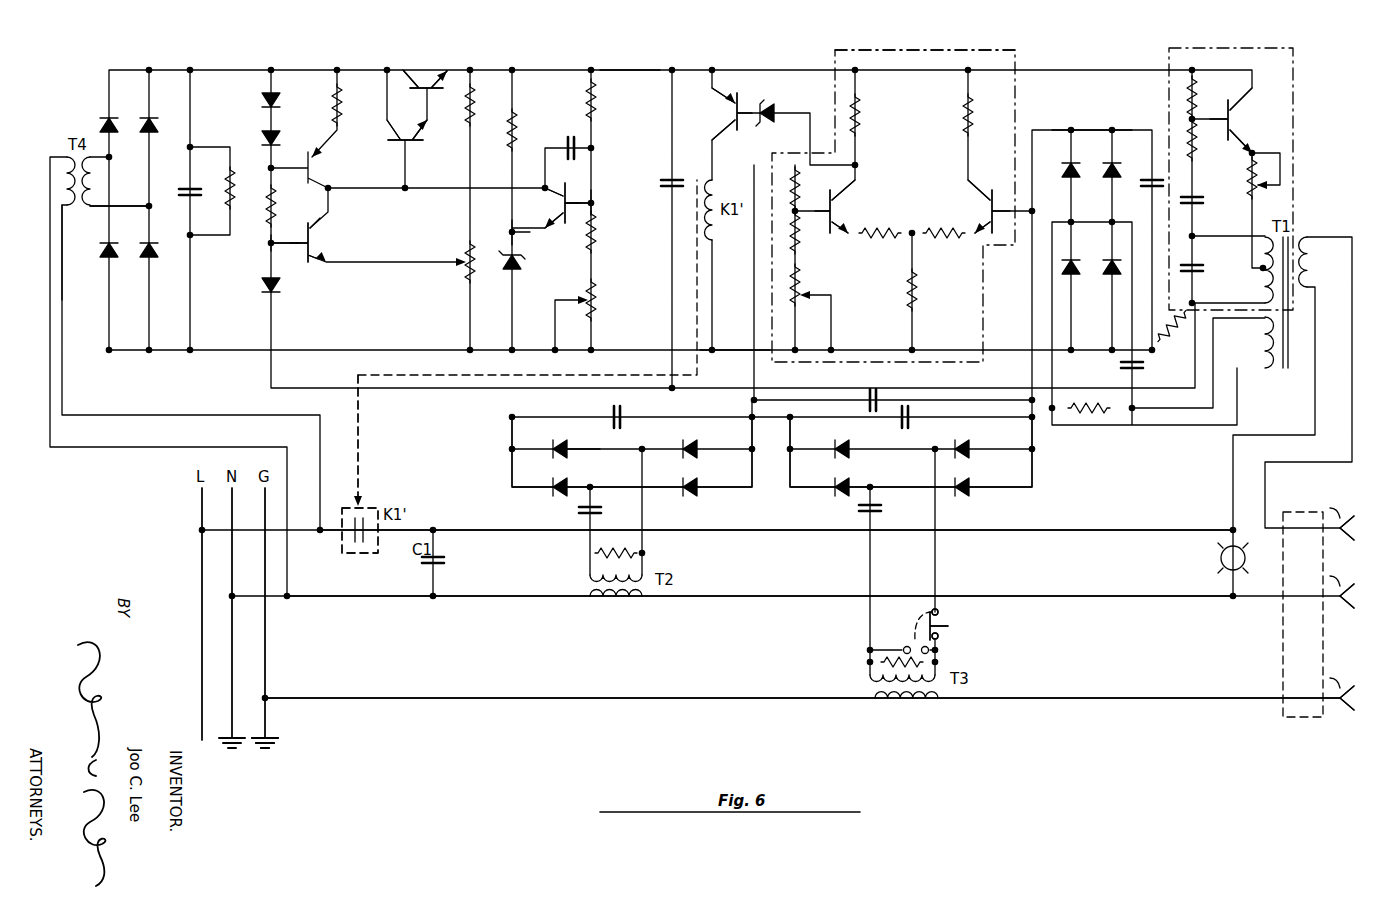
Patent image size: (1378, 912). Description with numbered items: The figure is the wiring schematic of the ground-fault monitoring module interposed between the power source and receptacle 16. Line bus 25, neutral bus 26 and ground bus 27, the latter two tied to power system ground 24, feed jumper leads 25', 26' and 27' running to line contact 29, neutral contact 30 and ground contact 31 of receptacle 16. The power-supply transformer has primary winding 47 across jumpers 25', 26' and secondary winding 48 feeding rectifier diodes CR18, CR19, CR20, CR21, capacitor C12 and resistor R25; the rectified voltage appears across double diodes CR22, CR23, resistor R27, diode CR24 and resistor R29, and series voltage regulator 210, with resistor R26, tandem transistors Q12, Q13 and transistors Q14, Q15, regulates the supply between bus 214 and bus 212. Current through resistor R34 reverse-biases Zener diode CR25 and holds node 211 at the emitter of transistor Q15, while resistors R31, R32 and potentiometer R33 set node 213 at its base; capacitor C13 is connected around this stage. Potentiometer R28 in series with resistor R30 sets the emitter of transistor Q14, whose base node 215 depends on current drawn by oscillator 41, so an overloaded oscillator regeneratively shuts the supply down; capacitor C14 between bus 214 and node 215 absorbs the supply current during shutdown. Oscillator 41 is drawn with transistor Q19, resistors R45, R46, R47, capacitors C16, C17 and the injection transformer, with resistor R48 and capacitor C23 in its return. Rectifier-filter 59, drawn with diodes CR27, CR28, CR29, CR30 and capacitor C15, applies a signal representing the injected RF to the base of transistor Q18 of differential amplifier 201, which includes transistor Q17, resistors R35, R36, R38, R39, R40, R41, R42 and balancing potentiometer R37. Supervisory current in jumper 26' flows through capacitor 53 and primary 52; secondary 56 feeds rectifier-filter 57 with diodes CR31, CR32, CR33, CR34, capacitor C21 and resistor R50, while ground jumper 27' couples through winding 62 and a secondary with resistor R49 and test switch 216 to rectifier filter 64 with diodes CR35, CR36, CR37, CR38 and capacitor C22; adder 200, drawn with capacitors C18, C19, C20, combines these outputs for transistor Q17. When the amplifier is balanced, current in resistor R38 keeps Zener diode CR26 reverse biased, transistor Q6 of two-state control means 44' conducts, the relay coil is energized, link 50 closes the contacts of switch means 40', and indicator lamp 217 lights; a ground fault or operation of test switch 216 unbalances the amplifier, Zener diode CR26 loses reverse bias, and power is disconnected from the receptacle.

The series voltage regulator 210 is at (441, 90).
The bus 214 is at (630, 70).
The two-state control means 44' is at (748, 79).
The differential amplifier 201 is at (918, 48).
The oscillator 41 is at (1196, 45).
The rectifier-filter 59 is at (1087, 135).
The node 215 is at (268, 246).
The node 211 is at (512, 230).
The node 213 is at (591, 203).
The bus 212 is at (744, 352).
The primary winding 47 is at (71, 252).
The secondary winding 48 is at (93, 185).
The adder 200 is at (504, 418).
The link 50 is at (368, 462).
The rectifier-filter 57 is at (534, 462).
The rectifier filter 64 is at (1000, 463).
The line jumper 25' is at (776, 521).
The neutral jumper 26' is at (760, 621).
The ground jumper 27' is at (802, 718).
The capacitor 53 is at (437, 562).
The secondary 56 is at (588, 572).
The primary 52 is at (610, 601).
The switch means 40' is at (368, 547).
The line bus 25 is at (184, 614).
The neutral bus 26 is at (218, 613).
The ground bus 27 is at (248, 613).
The power system ground 24 is at (275, 735).
The indicator lamp 217 is at (1221, 559).
The line contact 29 is at (1339, 510).
The neutral contact 30 is at (1339, 578).
The ground contact 31 is at (1343, 678).
The receptacle 16 is at (1280, 713).
The test switch 216 is at (952, 630).
The transformer T3 winding 62 is at (920, 703).
The diode CR18 is at (92, 114).
The diode CR19 is at (166, 114).
The diode CR20 is at (166, 264).
The diode CR21 is at (92, 264).
The double diode CR22 is at (292, 94).
The double diode CR23 is at (292, 132).
The diode CR24 is at (292, 289).
The Zener diode CR25 is at (533, 266).
The Zener diode CR26 is at (788, 108).
The diode CR27 is at (1068, 150).
The diode CR28 is at (1116, 150).
The diode CR29 is at (1078, 262).
The diode CR30 is at (1112, 278).
The diode CR31 is at (554, 443).
The diode CR32 is at (694, 443).
The diode CR33 is at (535, 496).
The diode CR34 is at (698, 496).
The diode CR35 is at (846, 442).
The diode CR36 is at (983, 443).
The diode CR37 is at (864, 481).
The diode CR38 is at (985, 496).
The capacitor C12 is at (180, 181).
The capacitor C13 is at (571, 142).
The capacitor C14 is at (656, 175).
The capacitor C15 is at (1140, 187).
The capacitor C16 is at (1205, 209).
The capacitor C17 is at (1205, 258).
The capacitor C18 is at (882, 400).
The capacitor C19 is at (637, 424).
The capacitor C20 is at (922, 423).
The capacitor C21 is at (606, 511).
The capacitor C22 is at (887, 515).
The capacitor C23 is at (1111, 365).
The resistor R25 is at (245, 188).
The resistor R26 is at (353, 105).
The resistor R27 is at (289, 206).
The potentiometer R28 is at (452, 256).
The resistor R29 is at (1172, 326).
The resistor R30 is at (486, 105).
The resistor R31 is at (608, 100).
The resistor R32 is at (608, 232).
The potentiometer R33 is at (608, 300).
The resistor R34 is at (528, 130).
The resistor R35 is at (811, 188).
The resistor R36 is at (811, 234).
The potentiometer R37 is at (814, 285).
The resistor R38 is at (873, 115).
The resistor R39 is at (948, 115).
The resistor R40 is at (880, 245).
The resistor R41 is at (944, 245).
The resistor R42 is at (927, 290).
The resistor R45 is at (1208, 97).
The resistor R46 is at (1208, 140).
The variable resistor R47 is at (1235, 178).
The resistor R48 is at (1092, 398).
The resistor R49 is at (870, 664).
The resistor R50 is at (616, 545).
The transistor Q6 is at (725, 114).
The tandem transistor Q12 is at (425, 70).
The tandem transistor Q13 is at (399, 142).
The transistor Q14 is at (322, 240).
The transistor Q15 is at (552, 205).
The transistor Q17 is at (842, 206).
The transistor Q18 is at (979, 206).
The transistor Q19 is at (1239, 120).